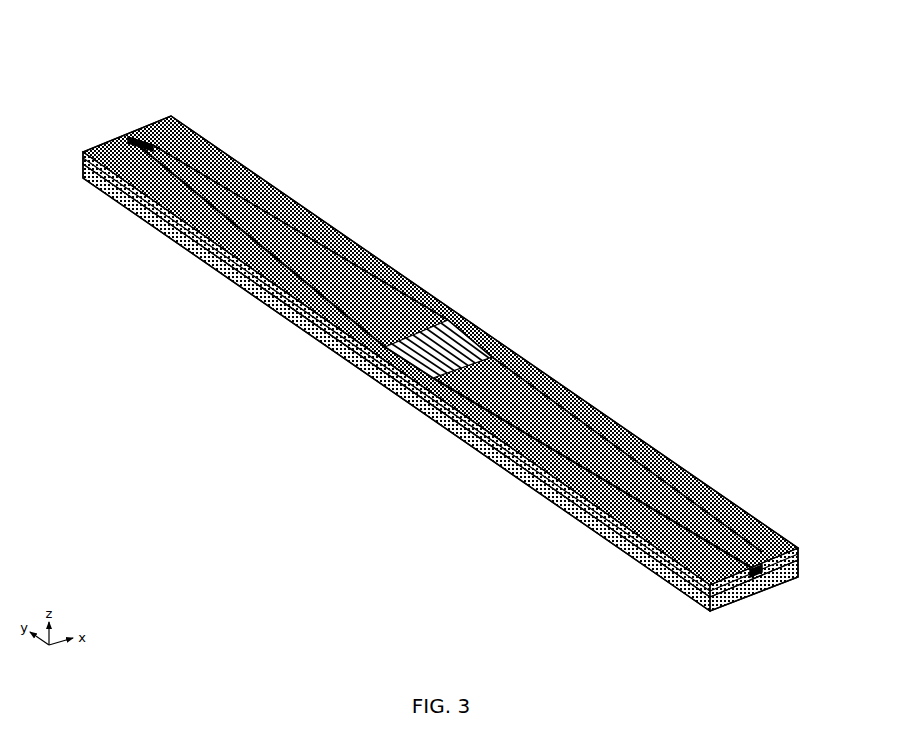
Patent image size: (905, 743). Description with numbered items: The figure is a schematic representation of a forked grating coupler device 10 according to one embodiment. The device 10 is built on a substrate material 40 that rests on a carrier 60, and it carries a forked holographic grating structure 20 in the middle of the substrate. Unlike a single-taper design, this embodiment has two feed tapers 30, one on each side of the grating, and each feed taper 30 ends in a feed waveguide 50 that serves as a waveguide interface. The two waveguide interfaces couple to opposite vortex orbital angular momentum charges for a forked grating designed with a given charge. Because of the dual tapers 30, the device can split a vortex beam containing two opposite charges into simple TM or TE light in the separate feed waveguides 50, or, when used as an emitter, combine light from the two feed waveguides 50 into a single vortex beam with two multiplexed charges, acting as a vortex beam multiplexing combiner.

The forked grating coupler device 10 is at (603, 56).
The grating 20 is at (475, 328).
The feed taper 30 is at (312, 250).
The substrate material 40 is at (687, 478).
The feed waveguide 50 is at (173, 120).
The carrier 60 is at (602, 538).